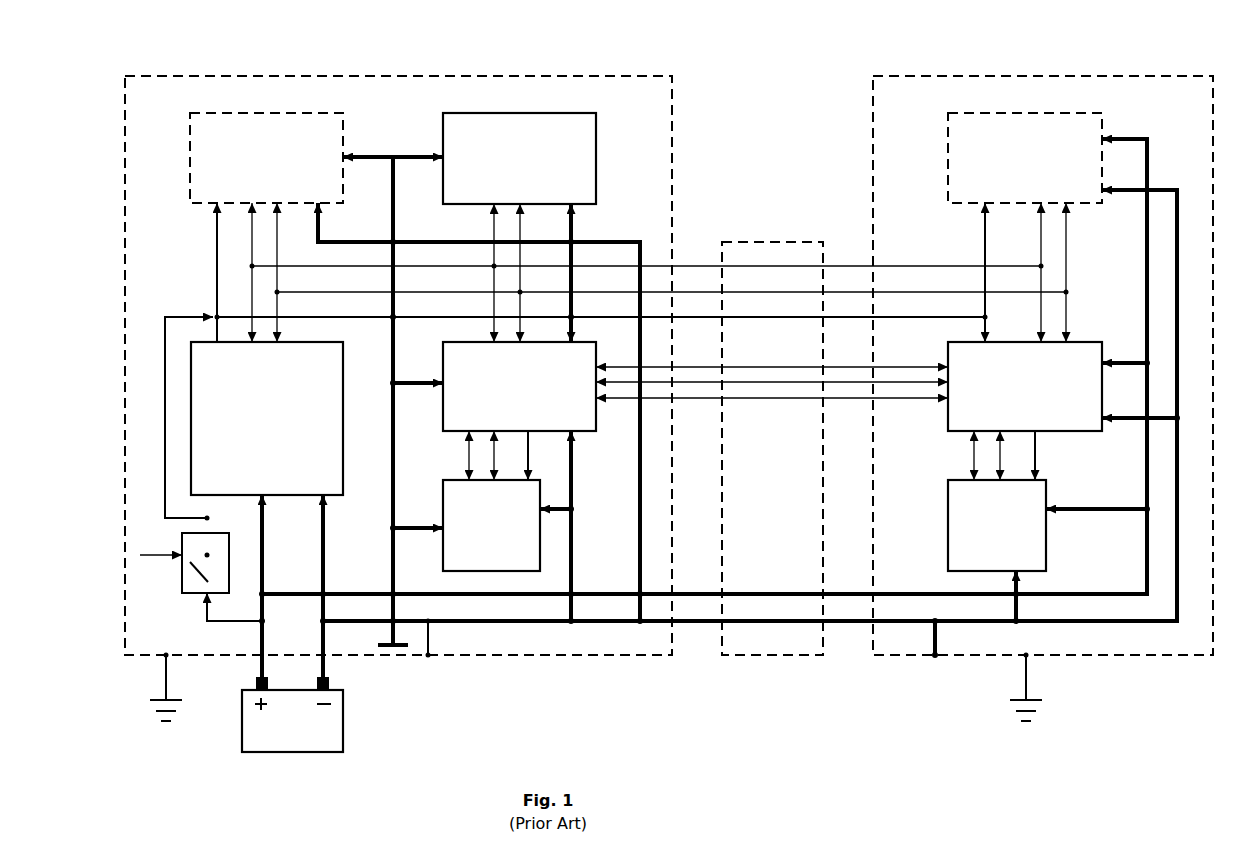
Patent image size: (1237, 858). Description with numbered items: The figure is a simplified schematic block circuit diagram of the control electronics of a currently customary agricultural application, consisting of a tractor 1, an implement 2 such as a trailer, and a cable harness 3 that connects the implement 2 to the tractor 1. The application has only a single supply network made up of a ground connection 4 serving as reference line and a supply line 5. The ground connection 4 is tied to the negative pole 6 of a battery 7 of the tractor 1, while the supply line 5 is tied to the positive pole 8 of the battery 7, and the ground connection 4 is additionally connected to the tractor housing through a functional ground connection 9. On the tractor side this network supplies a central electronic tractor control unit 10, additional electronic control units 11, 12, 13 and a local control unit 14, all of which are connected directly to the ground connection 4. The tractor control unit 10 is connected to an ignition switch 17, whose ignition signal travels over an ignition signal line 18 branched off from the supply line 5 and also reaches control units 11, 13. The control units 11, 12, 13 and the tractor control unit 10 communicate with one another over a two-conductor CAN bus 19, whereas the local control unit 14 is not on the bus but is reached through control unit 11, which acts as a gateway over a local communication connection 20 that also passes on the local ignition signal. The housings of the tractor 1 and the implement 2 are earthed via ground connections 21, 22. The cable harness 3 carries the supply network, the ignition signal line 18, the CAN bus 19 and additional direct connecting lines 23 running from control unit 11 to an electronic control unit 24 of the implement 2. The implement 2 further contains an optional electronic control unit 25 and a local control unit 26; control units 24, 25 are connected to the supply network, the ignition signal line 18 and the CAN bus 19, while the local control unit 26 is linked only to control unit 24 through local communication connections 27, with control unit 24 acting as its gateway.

The tractor 1 is at (310, 75).
The implement 2 is at (1033, 75).
The cable harness 3 is at (762, 242).
The ground connection 4 is at (510, 623).
The supply line 5 is at (535, 596).
The negative pole 6 is at (362, 679).
The battery 7 is at (283, 730).
The positive pole 8 is at (256, 683).
The functional ground connection 9 is at (395, 647).
The central electronic tractor control unit 10 is at (267, 418).
The electronic control unit 11 is at (519, 386).
The electronic control unit 12 is at (519, 158).
The electronic control unit 13 is at (266, 158).
The local control unit 14 is at (491, 525).
The ignition switch 17 is at (182, 580).
The ignition signal line 18 is at (165, 338).
The two-conductor CAN bus 19 is at (622, 290).
The local communication connection 20 is at (470, 459).
The ground connection 21 is at (160, 680).
The ground connection 22 is at (1030, 683).
The direct connecting lines 23 is at (744, 367).
The electronic control unit 24 is at (1025, 386).
The optional electronic control unit 25 is at (1025, 158).
The local control unit 26 is at (997, 525).
The local communication connections 27 is at (976, 462).